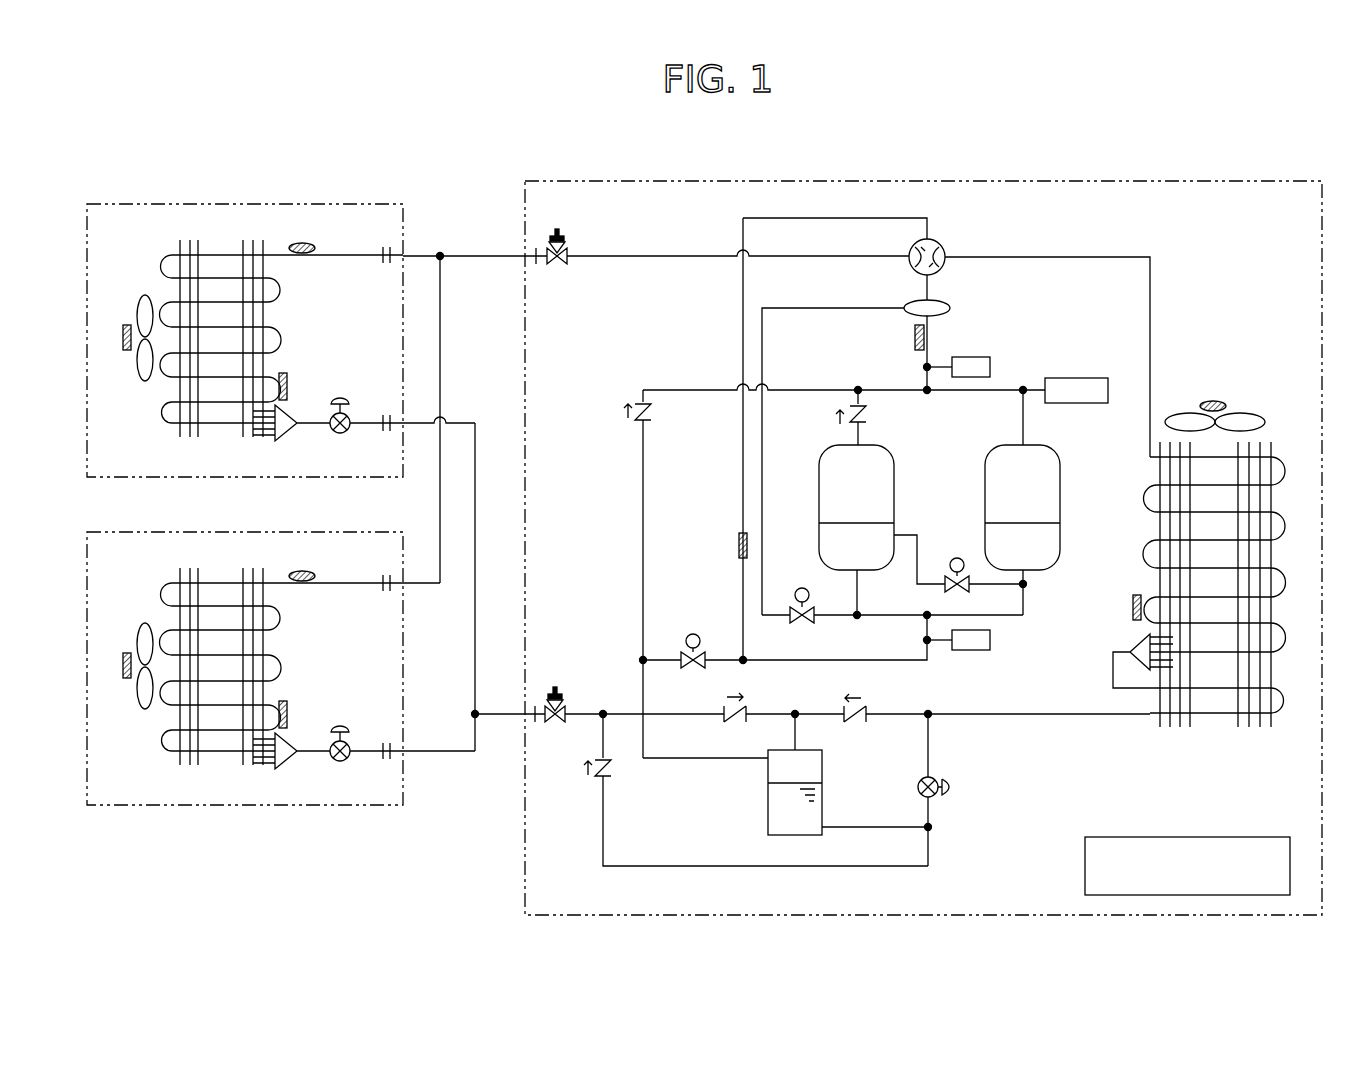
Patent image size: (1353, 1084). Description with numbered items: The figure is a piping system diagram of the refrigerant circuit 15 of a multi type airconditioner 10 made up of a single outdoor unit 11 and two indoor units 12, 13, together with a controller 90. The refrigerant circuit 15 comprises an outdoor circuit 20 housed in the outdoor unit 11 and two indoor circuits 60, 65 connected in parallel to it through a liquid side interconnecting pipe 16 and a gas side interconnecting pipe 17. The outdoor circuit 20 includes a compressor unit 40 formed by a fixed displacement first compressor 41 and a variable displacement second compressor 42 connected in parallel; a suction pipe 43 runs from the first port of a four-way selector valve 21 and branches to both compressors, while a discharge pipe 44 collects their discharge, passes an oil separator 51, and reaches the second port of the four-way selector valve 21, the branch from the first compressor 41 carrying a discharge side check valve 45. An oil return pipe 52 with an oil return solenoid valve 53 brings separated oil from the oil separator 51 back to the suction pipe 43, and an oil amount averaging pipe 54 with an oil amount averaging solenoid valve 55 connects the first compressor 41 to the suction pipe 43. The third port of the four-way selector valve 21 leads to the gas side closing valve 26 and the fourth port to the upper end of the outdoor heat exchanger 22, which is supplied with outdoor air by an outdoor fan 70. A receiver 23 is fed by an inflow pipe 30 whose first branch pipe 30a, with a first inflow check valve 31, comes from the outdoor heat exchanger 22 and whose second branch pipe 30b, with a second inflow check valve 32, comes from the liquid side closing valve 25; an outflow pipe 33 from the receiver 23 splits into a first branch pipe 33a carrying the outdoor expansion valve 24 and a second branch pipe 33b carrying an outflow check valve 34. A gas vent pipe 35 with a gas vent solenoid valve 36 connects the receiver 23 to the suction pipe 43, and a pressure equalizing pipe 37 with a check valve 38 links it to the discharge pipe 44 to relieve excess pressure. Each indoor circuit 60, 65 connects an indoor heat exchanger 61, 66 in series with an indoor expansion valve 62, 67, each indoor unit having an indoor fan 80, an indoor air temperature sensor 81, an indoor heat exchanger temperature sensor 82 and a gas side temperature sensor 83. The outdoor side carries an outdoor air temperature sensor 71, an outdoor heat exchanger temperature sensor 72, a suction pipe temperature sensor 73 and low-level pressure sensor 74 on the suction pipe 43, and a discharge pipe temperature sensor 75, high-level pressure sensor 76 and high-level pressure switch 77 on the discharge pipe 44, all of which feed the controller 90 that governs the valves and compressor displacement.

The airconditioner 10 is at (430, 188).
The outdoor unit 11 is at (1204, 180).
The first indoor unit 12 is at (147, 203).
The second indoor unit 13 is at (127, 806).
The refrigerant circuit 15 is at (638, 255).
The liquid side interconnecting pipe 16 is at (486, 716).
The gas side interconnecting pipe 17 is at (480, 256).
The outdoor circuit 20 is at (1040, 256).
The four-way selector valve 21 is at (940, 241).
The outdoor heat exchanger 22 is at (1212, 727).
The receiver 23 is at (760, 822).
The outdoor expansion valve 24 is at (956, 790).
The liquid side closing valve 25 is at (552, 725).
The gas side closing valve 26 is at (560, 265).
The inflow pipe 30 is at (815, 720).
The first branch pipe of the inflow pipe 30a is at (908, 714).
The second branch pipe of the inflow pipe 30b is at (620, 713).
The first inflow check valve 31 is at (866, 712).
The second inflow check valve 32 is at (748, 714).
The outflow pipe 33 is at (867, 827).
The first branch pipe of the outflow pipe 33a is at (930, 735).
The second branch pipe of the outflow pipe 33b is at (810, 868).
The outflow check valve 34 is at (606, 778).
The gas vent pipe 35 is at (682, 760).
The gas vent solenoid valve 36 is at (692, 633).
The pressure equalizing pipe 37 is at (643, 497).
The check valve for pressure equalization 38 is at (643, 407).
The compressor unit 40 is at (949, 444).
The first compressor 41 is at (819, 483).
The second compressor 42 is at (1060, 495).
The suction pipe 43 is at (877, 660).
The discharge pipe 44 is at (929, 336).
The discharge side check valve 45 is at (866, 418).
The oil separator 51 is at (905, 305).
The oil return pipe 52 is at (798, 308).
The oil return solenoid valve 53 is at (802, 588).
The oil amount averaging pipe 54 is at (914, 535).
The oil amount averaging solenoid valve 55 is at (957, 558).
The first indoor circuit 60 is at (350, 260).
The first indoor heat exchanger 61 is at (160, 420).
The first indoor expansion valve 62 is at (347, 402).
The second indoor circuit 65 is at (350, 588).
The second indoor heat exchanger 66 is at (160, 748).
The second indoor expansion valve 67 is at (347, 730).
The outdoor fan 70 is at (1242, 413).
The outdoor air temperature sensor 71 is at (1215, 400).
The outdoor heat exchanger temperature sensor 72 is at (1130, 607).
The suction pipe temperature sensor 73 is at (735, 545).
The low-level pressure sensor 74 is at (990, 640).
The discharge pipe temperature sensor 75 is at (915, 338).
The high-level pressure sensor 76 is at (990, 367).
The high-level pressure switch 77 is at (1080, 405).
The indoor fan 80 is at (138, 305).
The indoor air temperature sensor 81 is at (125, 350).
The indoor heat exchanger temperature sensor 82 is at (286, 380).
The gas side temperature sensor 83 is at (312, 246).
The controller 90 is at (1085, 866).